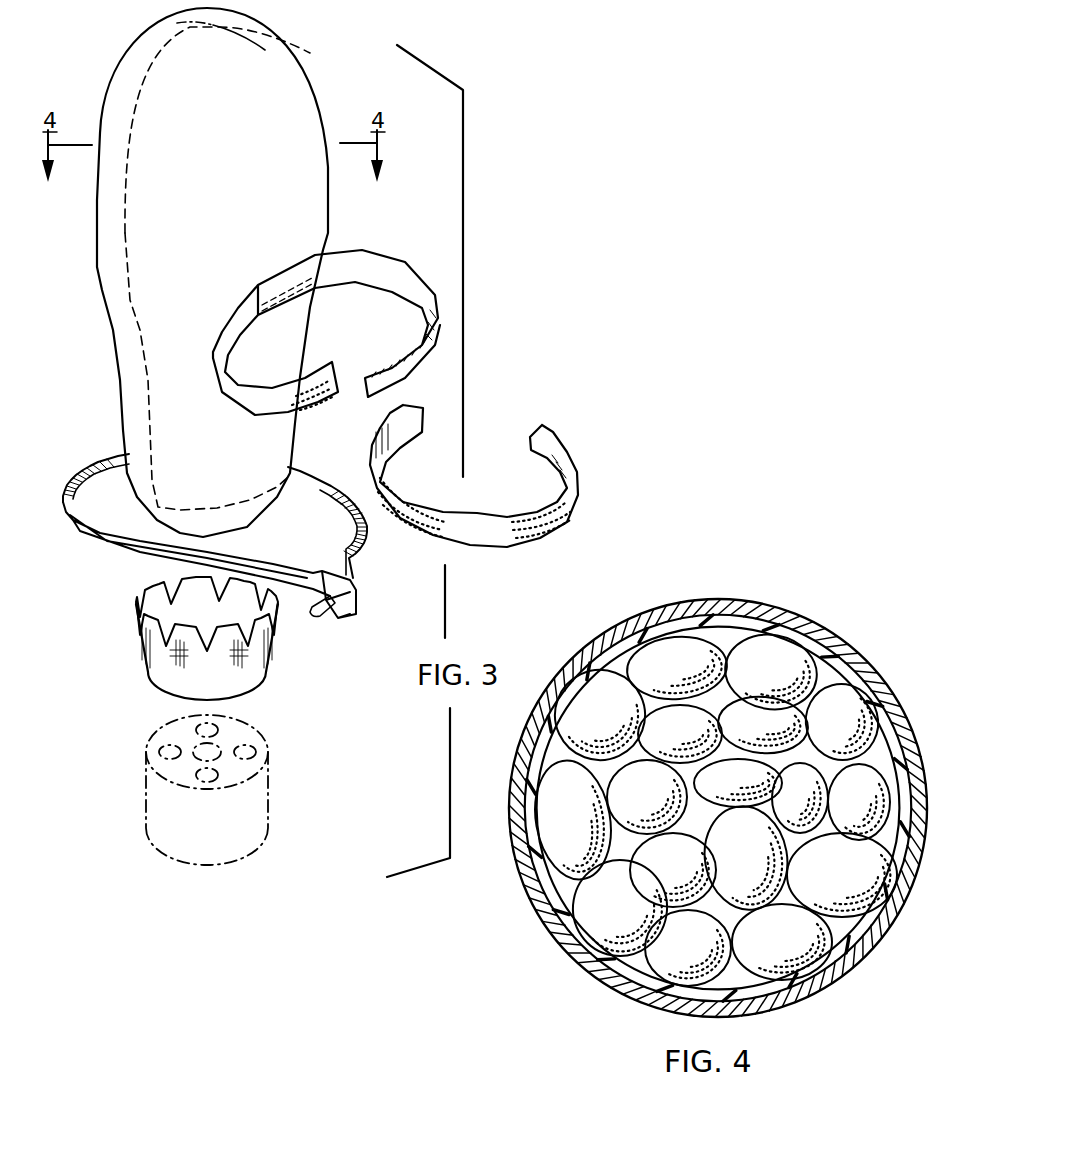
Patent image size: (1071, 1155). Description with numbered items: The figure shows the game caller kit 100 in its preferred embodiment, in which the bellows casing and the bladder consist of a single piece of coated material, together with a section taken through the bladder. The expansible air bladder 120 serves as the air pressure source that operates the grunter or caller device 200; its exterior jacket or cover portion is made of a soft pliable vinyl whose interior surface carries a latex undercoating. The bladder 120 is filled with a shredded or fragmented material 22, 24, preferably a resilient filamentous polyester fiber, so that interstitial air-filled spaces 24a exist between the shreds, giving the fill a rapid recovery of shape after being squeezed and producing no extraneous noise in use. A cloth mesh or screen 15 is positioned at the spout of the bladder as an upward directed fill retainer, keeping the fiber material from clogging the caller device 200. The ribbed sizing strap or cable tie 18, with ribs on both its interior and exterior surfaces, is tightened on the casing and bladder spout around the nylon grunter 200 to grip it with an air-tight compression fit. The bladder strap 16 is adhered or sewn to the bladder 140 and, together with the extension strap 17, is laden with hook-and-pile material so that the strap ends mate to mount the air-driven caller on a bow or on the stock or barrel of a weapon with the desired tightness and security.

In FIG. 3, the game caller kit 100 is at (483, 248).
In FIG. 3, the expansible air bladder 120 is at (239, 202).
In FIG. 4, the expansible air bladder 120 is at (790, 617).
In FIG. 3, the bladder strap 16 is at (390, 258).
In FIG. 3, the extension strap 17 is at (565, 443).
In FIG. 3, the ribbed sizing strap or cable tie 18 is at (365, 538).
In FIG. 3, the cloth mesh or screen 15 is at (267, 665).
In FIG. 3, the grunter or caller device 200 is at (270, 773).
In FIG. 4, the bladder 140 is at (671, 755).
In FIG. 4, the interstitial air-filled spaces 24a is at (820, 757).
In FIG. 4, the fill material 22 is at (671, 809).
In FIG. 4, the fill material 24 is at (605, 901).